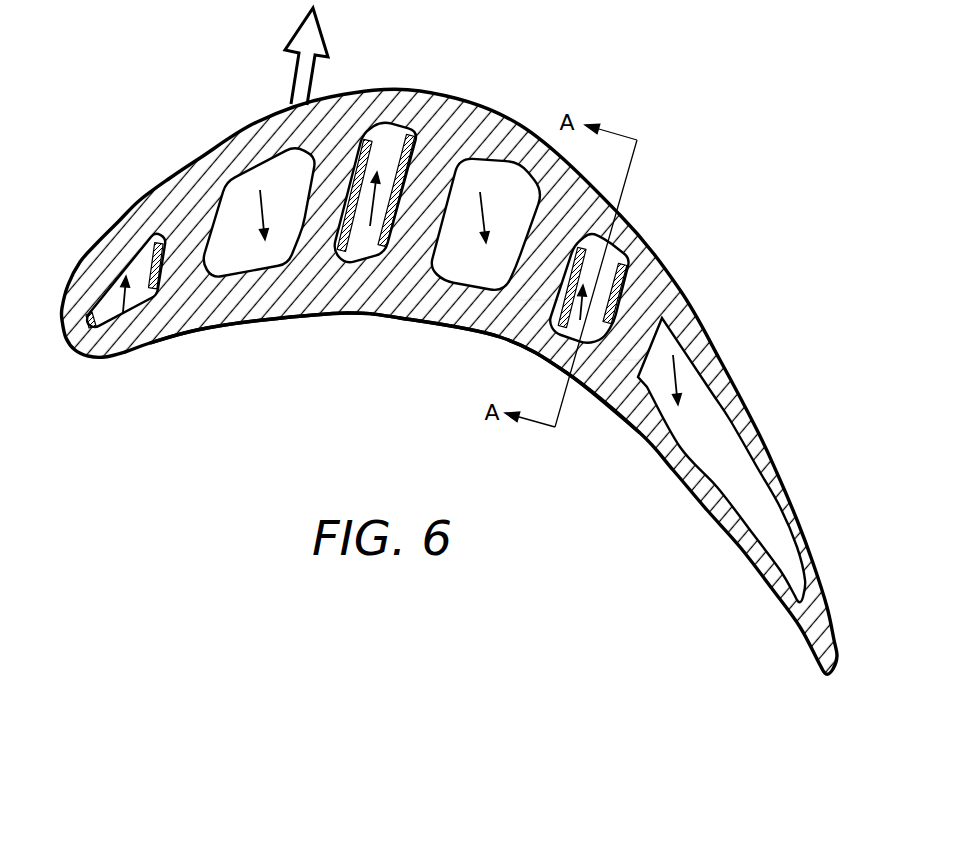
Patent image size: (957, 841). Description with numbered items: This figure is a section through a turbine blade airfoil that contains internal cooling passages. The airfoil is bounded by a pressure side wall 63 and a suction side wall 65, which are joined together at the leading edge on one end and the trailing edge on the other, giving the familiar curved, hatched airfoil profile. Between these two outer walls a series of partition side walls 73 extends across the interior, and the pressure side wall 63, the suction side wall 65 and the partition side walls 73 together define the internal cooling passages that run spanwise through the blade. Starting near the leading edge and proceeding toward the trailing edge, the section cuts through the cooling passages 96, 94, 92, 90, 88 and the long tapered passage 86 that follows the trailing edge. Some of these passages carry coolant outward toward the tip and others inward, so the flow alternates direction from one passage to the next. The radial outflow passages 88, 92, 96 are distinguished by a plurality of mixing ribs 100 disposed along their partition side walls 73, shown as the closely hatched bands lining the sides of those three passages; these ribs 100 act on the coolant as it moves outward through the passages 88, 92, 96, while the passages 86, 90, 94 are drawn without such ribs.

The pressure side wall 63 is at (355, 317).
The suction side wall 65 is at (416, 93).
The partition side walls 73 is at (533, 290).
The internal cooling passage 86 is at (690, 384).
The radial outflow internal cooling passage 88 is at (608, 270).
The internal cooling passage 90 is at (503, 178).
The radial outflow internal cooling passage 92 is at (385, 142).
The internal cooling passage 94 is at (245, 180).
The radial outflow internal cooling passage 96 is at (141, 265).
The mixing ribs 100 is at (153, 296).